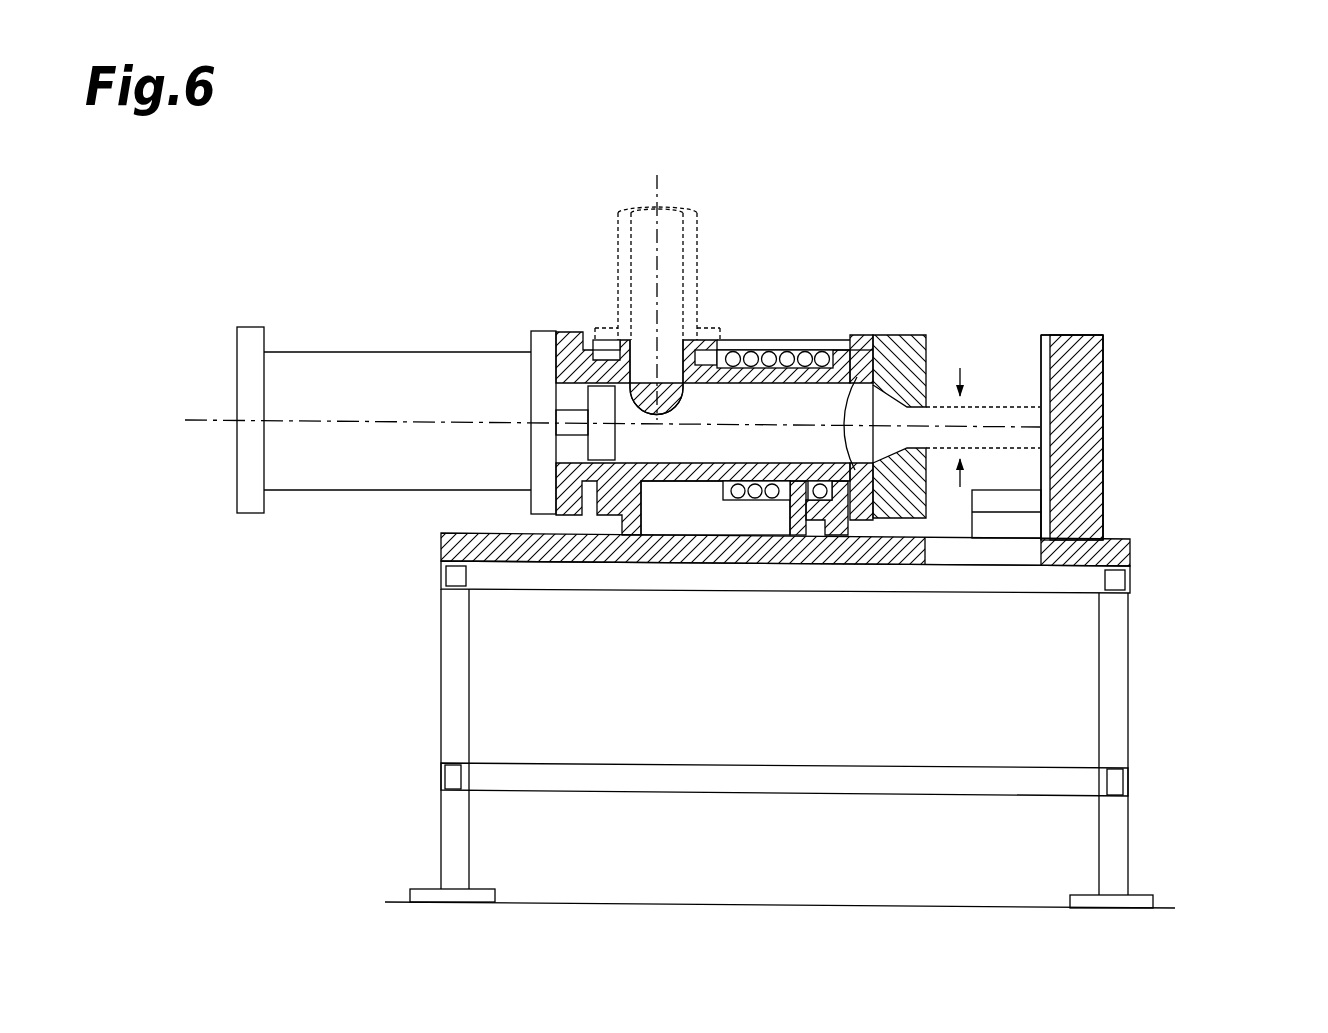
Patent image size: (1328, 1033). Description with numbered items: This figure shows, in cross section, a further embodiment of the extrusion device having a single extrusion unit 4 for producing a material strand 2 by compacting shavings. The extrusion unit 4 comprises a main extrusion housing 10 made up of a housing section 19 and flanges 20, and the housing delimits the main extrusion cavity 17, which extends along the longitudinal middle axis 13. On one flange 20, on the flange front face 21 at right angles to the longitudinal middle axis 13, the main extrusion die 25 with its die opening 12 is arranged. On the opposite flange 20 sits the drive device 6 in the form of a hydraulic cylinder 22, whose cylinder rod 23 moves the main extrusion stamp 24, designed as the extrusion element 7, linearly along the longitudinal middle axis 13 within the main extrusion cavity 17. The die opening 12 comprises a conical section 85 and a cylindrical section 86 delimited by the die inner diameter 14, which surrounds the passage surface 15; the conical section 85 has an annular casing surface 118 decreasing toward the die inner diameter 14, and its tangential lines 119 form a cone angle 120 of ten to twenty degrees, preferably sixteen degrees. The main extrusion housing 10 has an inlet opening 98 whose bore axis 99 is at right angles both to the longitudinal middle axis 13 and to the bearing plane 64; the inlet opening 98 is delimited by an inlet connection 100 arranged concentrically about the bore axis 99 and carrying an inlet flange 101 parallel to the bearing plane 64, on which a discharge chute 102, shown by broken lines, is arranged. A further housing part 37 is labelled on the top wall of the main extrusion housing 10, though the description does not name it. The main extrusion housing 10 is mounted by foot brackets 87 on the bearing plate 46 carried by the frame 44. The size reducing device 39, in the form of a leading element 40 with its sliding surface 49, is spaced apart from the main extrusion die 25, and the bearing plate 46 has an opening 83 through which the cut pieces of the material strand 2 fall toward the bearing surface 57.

The material strand 2 is at (995, 418).
The extrusion unit 4 is at (828, 265).
The drive device 6 is at (236, 300).
The extrusion element 7 is at (597, 487).
The main extrusion housing 10 is at (775, 295).
The die opening 12 is at (940, 457).
The longitudinal middle axis 13 is at (702, 418).
The die inner diameter 14 is at (960, 410).
The passage surface 15 is at (957, 407).
The main extrusion cavity 17 is at (763, 445).
The housing section 19 is at (687, 498).
The flanges 20 is at (560, 323).
The flange front face 21 is at (878, 342).
The hydraulic cylinder 22 is at (320, 385).
The cylinder rod 23 is at (565, 418).
The main extrusion stamp 24 is at (603, 440).
The main extrusion die 25 is at (968, 305).
The housing part 37 is at (780, 333).
The size reducing device 39 is at (1132, 316).
The leading element 40 is at (1078, 360).
The frame 44 is at (772, 652).
The bearing plate 46 is at (1108, 551).
The sliding surface 49 is at (1048, 347).
The bearing surface 57 is at (1167, 905).
The bearing plane 64 is at (1105, 535).
The opening 83 is at (1022, 577).
The conical section 85 is at (892, 478).
The cylindrical section 86 is at (914, 467).
The foot brackets 87 is at (645, 515).
The inlet opening 98 is at (663, 388).
The bore axis 99 is at (620, 330).
The inlet connection 100 is at (600, 352).
The inlet flange 101 is at (595, 338).
The discharge chute 102 is at (657, 268).
The casing surface 118 is at (863, 400).
The tangential lines 119 is at (853, 383).
The cone angle 120 is at (815, 429).